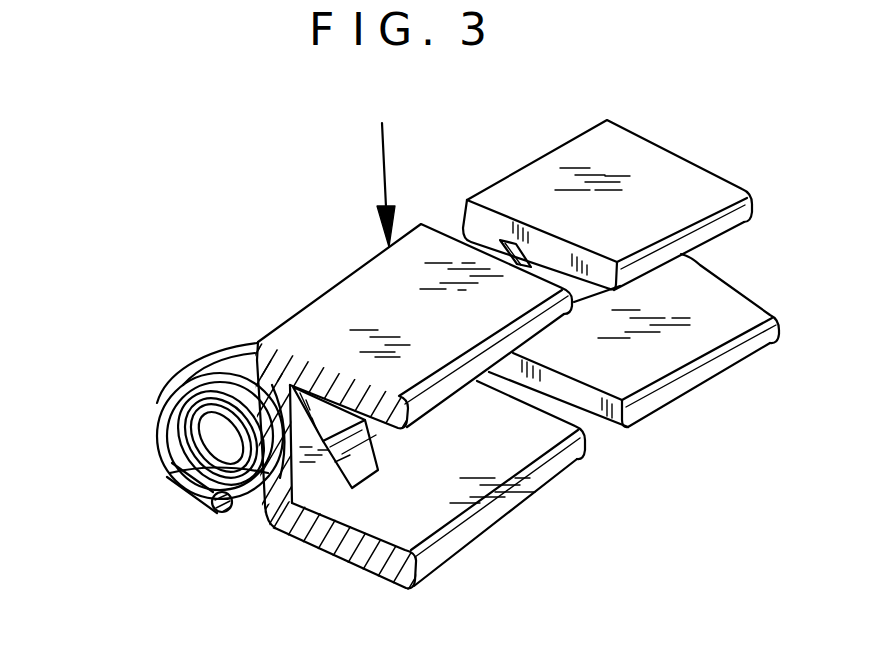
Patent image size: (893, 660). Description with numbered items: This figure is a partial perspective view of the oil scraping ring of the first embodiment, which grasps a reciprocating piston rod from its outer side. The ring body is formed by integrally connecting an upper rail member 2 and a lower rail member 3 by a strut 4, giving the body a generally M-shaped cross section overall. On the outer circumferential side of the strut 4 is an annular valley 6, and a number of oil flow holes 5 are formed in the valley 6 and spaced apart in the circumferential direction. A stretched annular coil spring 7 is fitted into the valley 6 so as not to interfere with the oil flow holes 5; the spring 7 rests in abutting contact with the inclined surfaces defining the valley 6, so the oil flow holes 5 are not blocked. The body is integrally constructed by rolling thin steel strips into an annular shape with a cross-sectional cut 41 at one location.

The upper rail member 2 is at (356, 368).
The lower rail member 3 is at (383, 567).
The strut 4 is at (300, 480).
The oil flow holes 5 is at (340, 440).
The annular valley 6 is at (170, 474).
The coil spring 7 is at (157, 403).
The cross-sectional cut 41 is at (441, 215).